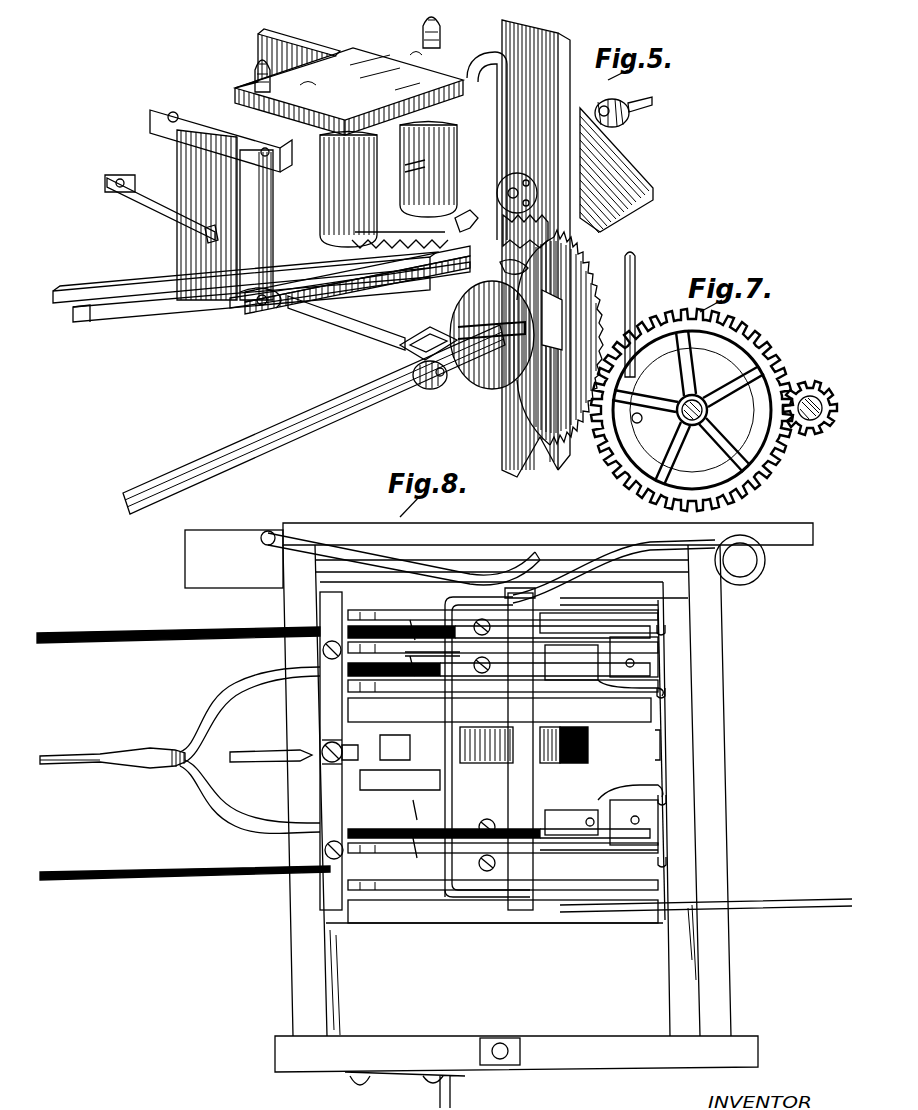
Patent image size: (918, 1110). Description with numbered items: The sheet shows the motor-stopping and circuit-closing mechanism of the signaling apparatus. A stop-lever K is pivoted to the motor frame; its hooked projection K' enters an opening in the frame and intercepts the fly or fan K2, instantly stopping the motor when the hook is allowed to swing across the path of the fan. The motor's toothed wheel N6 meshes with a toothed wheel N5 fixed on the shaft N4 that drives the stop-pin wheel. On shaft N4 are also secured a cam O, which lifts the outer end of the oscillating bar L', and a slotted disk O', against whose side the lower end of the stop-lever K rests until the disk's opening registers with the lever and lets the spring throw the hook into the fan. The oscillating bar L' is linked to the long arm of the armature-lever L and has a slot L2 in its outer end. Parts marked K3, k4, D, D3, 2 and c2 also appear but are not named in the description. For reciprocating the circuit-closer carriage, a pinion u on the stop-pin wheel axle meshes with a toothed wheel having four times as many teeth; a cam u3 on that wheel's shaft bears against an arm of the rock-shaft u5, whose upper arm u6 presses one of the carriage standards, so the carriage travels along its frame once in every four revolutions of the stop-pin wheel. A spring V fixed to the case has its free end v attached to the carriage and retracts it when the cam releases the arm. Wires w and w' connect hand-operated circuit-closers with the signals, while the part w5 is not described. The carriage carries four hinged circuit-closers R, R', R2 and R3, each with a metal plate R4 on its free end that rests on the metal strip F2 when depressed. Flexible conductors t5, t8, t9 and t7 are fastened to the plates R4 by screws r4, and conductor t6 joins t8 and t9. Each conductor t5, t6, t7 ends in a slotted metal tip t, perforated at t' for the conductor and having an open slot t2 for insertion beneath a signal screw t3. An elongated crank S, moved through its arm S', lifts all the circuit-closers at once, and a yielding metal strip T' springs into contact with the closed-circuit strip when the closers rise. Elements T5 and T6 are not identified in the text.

In FIG. 5, the stop-lever K is at (536, 238).
In FIG. 5, the fly or fan of the motor K2 is at (616, 165).
In FIG. 5, the bent supporting arm K3 is at (468, 142).
In FIG. 5, the hooked projection K' is at (522, 210).
In FIG. 5, the pawl k4 is at (514, 269).
In FIG. 5, the electromagnet frame and coils D is at (303, 164).
In FIG. 5, the magnet coil D3 is at (419, 169).
In FIG. 5, the binding post pin 2 is at (287, 127).
In FIG. 5, the free end of the spring v is at (161, 209).
In FIG. 5, the toothed wheel of the motor N6 is at (450, 225).
In FIG. 5, the toothed wheel N5 is at (520, 395).
In FIG. 5, the shaft N4 is at (314, 419).
In FIG. 5, the disk O' is at (492, 335).
In FIG. 5, the cam O is at (437, 390).
In FIG. 5, the elongated crank S is at (245, 277).
In FIG. 5, the arm S' is at (241, 308).
In FIG. 5, the armature-lever L is at (350, 292).
In FIG. 5, the slot L2 is at (404, 349).
In FIG. 5, the oscillating bar L' is at (419, 383).
In FIG. 5, the lever arm c2 is at (346, 323).
In FIG. 7, the stop rod w5 is at (644, 314).
In FIG. 7, the wire w' is at (692, 410).
In FIG. 7, the cam u3 is at (688, 407).
In FIG. 7, the wire w is at (635, 428).
In FIG. 7, the pinion u is at (810, 398).
In FIG. 8, the rock-shaft u5 is at (271, 526).
In FIG. 8, the arm u6 is at (404, 557).
In FIG. 8, the spring V is at (635, 720).
In FIG. 8, the flexible conductor t5 is at (343, 622).
In FIG. 8, the flexible conductor t6 is at (112, 744).
In FIG. 8, the flexible conductor t7 is at (185, 858).
In FIG. 8, the flexible conductor t8 is at (415, 712).
In FIG. 8, the flexible conductor t9 is at (415, 799).
In FIG. 8, the open slotted metal tip t is at (274, 739).
In FIG. 8, the perforation t' is at (320, 780).
In FIG. 8, the open slot t2 is at (350, 746).
In FIG. 8, the screw t3 is at (333, 722).
In FIG. 8, the contact rod T5 is at (432, 745).
In FIG. 8, the contact pipe T6 is at (446, 620).
In FIG. 8, the yielding metal strip T' is at (609, 741).
In FIG. 8, the screws r4 is at (494, 745).
In FIG. 8, the hinged circuit-closer R is at (599, 623).
In FIG. 8, the hinged circuit-closer R' is at (604, 670).
In FIG. 8, the hinged circuit-closer R2 is at (604, 810).
In FIG. 8, the hinged circuit-closer R3 is at (599, 859).
In FIG. 8, the metal plate R4 is at (666, 631).
In FIG. 8, the metal strip F2 is at (658, 745).